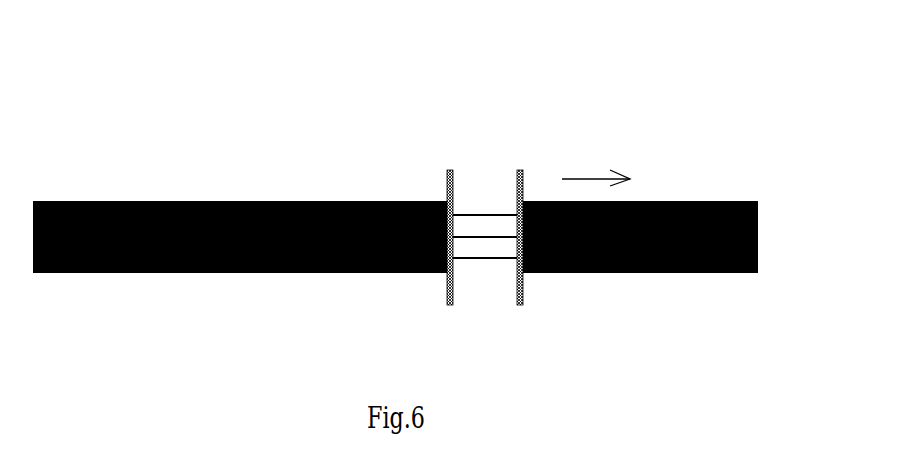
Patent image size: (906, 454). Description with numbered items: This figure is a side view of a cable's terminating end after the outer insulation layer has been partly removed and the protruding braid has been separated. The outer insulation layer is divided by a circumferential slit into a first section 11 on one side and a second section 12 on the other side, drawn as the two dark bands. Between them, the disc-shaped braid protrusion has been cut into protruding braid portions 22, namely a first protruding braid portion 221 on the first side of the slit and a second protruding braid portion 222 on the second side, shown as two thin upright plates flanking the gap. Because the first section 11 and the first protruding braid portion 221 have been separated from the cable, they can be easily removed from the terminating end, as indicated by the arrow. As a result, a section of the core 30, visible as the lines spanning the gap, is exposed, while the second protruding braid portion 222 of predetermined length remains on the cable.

The first section 11 is at (628, 273).
The second section 12 is at (290, 273).
The protruding braid portions 22 is at (481, 158).
The first protruding braid portion 221 is at (518, 172).
The second protruding braid portion 222 is at (450, 172).
The core 30 is at (485, 293).